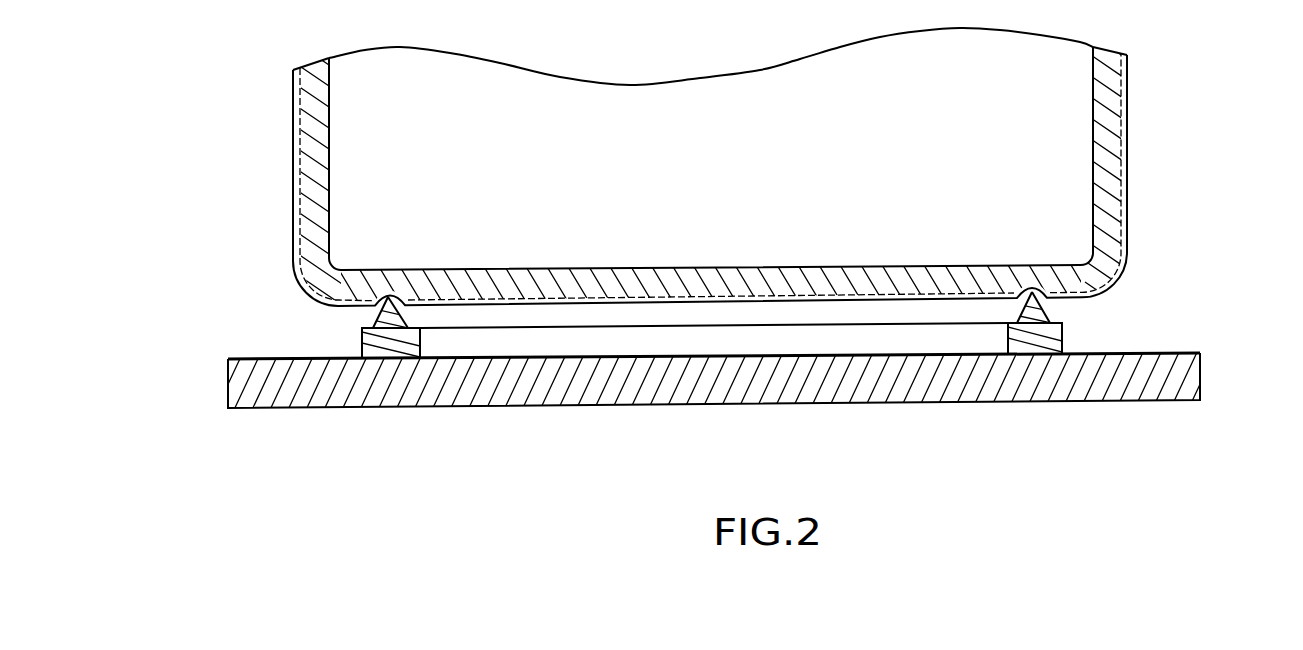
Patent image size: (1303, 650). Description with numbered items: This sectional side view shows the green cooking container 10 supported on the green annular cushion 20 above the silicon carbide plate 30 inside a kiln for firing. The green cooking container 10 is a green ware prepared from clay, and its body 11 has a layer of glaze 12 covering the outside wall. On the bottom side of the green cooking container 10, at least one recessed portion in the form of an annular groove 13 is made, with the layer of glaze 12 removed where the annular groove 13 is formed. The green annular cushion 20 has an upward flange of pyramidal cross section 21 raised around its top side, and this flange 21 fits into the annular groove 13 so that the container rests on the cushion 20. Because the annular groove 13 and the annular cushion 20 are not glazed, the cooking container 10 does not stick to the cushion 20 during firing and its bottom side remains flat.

The green cooking container 10 is at (657, 188).
The body 11 is at (320, 138).
The layer of glaze 12 is at (297, 183).
The annular groove 13 is at (1022, 290).
The green annular cushion 20 is at (1045, 334).
The upward flange of pyramidal cross section 21 is at (382, 312).
The base plate 30 is at (1192, 380).